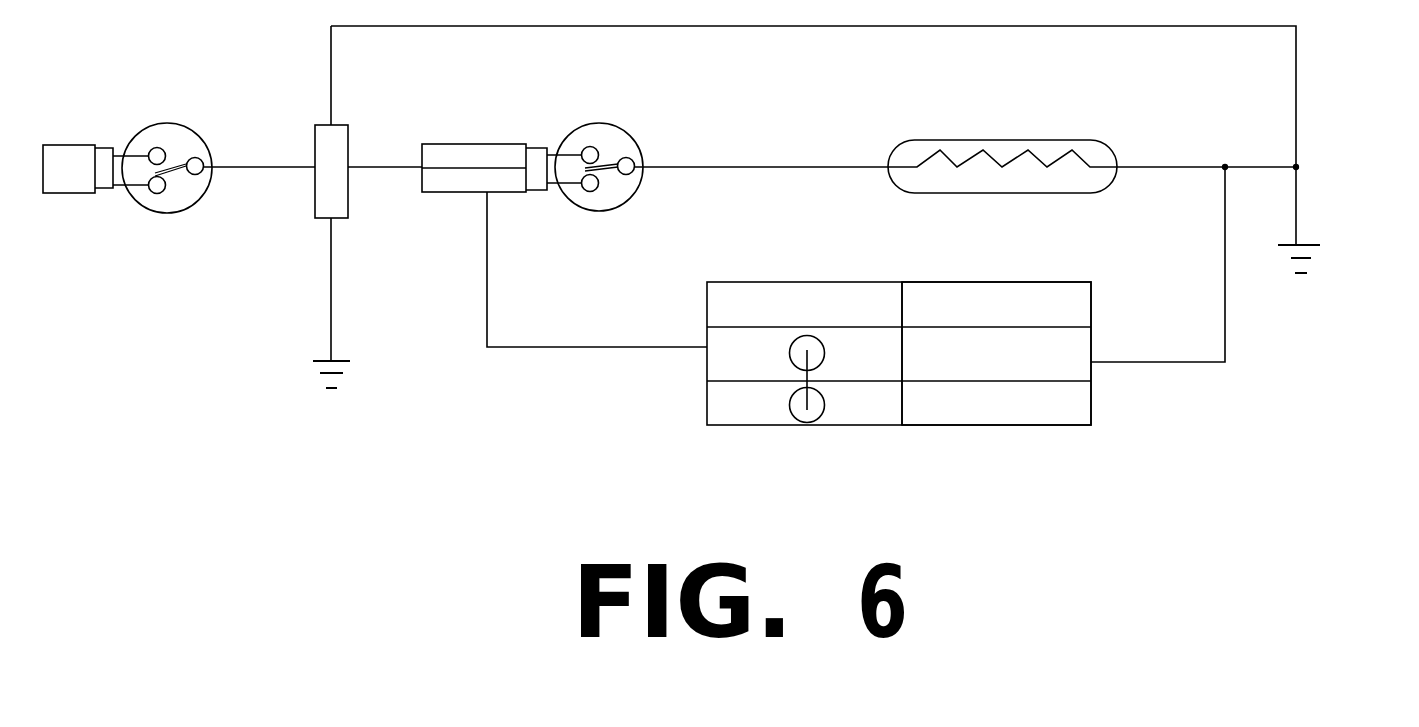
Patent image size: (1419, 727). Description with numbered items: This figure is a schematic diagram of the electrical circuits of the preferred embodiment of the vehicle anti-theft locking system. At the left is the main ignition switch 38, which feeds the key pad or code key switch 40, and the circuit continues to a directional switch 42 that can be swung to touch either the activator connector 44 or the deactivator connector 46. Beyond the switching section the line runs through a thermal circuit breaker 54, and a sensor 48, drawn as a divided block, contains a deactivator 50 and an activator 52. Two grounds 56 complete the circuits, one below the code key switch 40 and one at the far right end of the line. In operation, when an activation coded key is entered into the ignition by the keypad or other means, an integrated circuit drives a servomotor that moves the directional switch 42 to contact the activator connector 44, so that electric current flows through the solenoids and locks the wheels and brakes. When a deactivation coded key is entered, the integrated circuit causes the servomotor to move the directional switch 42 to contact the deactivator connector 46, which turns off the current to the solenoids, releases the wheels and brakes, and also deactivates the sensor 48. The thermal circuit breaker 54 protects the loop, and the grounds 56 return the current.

The main ignition switch 38 is at (58, 145).
The key pad or code key switch 40 is at (340, 125).
The directional switch 42 is at (630, 160).
The activator connector 44 is at (583, 152).
The deactivator connector 46 is at (597, 190).
The sensor 48 is at (899, 389).
The deactivator 50 is at (841, 353).
The activator 52 is at (996, 353).
The thermal circuit breaker 54 is at (992, 140).
The grounds 56 is at (340, 360).